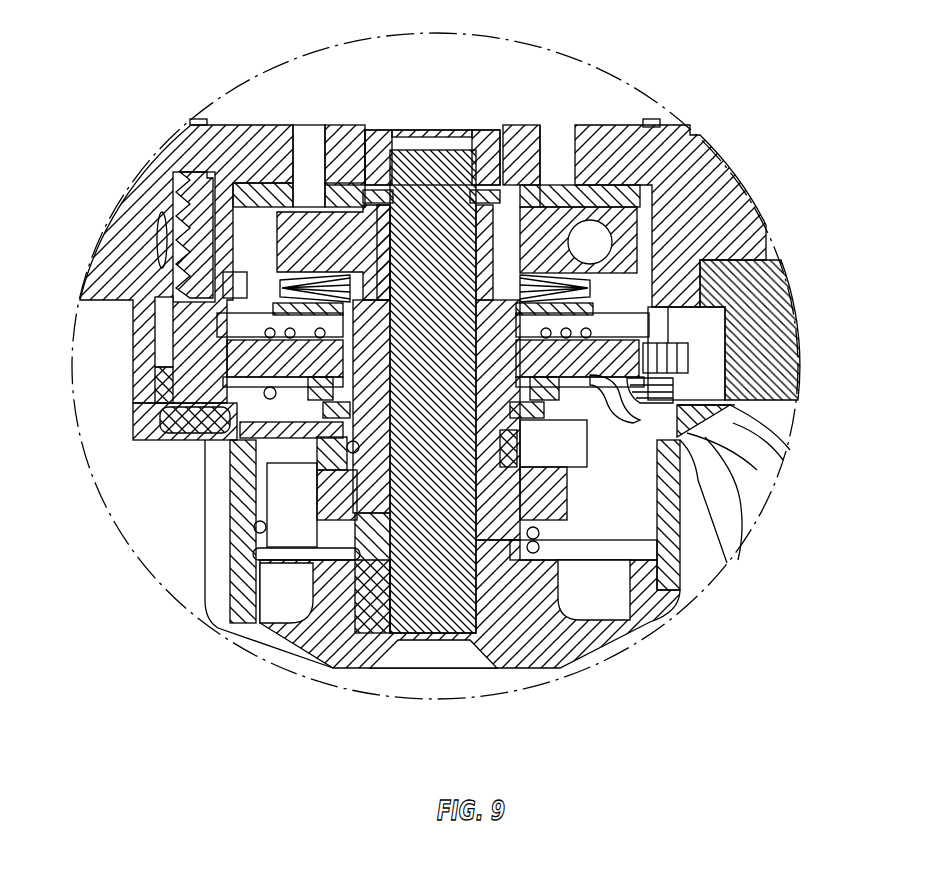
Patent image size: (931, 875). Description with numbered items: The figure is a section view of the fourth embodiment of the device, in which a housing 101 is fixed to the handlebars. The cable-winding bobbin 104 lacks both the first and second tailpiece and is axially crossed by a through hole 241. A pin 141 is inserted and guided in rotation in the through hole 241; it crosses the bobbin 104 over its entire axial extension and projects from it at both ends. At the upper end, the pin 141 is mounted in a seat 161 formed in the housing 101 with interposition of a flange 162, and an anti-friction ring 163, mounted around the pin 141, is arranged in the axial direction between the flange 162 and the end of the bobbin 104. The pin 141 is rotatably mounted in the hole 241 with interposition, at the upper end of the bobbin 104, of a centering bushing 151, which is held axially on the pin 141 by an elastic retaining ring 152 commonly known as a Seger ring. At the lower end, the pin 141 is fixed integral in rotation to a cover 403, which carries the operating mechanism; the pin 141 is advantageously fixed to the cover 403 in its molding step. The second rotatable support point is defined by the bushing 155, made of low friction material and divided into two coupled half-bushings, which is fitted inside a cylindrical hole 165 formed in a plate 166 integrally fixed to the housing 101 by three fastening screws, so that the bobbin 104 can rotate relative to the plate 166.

The housing 101 is at (697, 157).
The cable-winding bobbin 104 is at (620, 125).
The seat 161 is at (222, 172).
The flange 162 is at (380, 150).
The anti-friction ring 163 is at (388, 208).
The centering bushing 151 is at (367, 207).
The elastic retaining ring 152 is at (553, 200).
The plate 166 is at (140, 417).
The cylindrical hole 165 is at (345, 463).
The second centering bushing 155 is at (540, 453).
The cover 403 is at (280, 603).
The pin 141 is at (360, 605).
The through hole 241 is at (473, 392).